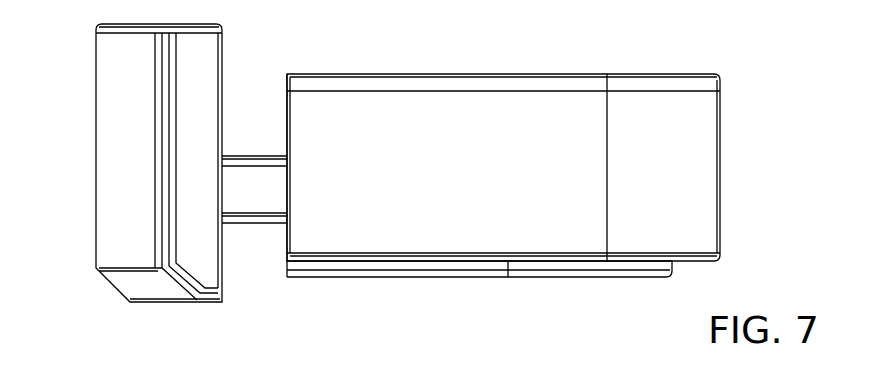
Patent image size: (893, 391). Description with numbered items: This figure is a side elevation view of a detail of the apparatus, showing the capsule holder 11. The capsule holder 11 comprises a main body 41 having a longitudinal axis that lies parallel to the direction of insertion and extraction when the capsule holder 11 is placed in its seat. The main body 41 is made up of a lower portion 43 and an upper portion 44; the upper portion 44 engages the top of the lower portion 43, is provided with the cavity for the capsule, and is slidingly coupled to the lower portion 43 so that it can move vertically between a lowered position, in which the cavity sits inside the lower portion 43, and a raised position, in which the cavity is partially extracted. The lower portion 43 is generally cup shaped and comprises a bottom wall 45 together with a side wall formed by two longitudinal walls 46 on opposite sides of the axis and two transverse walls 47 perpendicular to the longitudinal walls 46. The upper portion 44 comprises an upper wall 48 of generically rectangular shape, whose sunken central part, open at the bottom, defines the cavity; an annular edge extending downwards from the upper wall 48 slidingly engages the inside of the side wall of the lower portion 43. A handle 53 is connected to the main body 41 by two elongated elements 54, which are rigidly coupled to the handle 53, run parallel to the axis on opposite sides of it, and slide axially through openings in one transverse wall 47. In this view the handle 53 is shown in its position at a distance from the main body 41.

The capsule holder 11 is at (308, 50).
The main body 41 is at (725, 142).
The lower portion 43 is at (693, 215).
The upper portion 44 is at (628, 82).
The bottom wall 45 is at (572, 262).
The longitudinal walls 46 is at (462, 236).
The transverse walls 47 is at (697, 156).
The upper wall 48 is at (415, 82).
The handle 53 is at (113, 158).
The elongated elements 54 is at (260, 205).